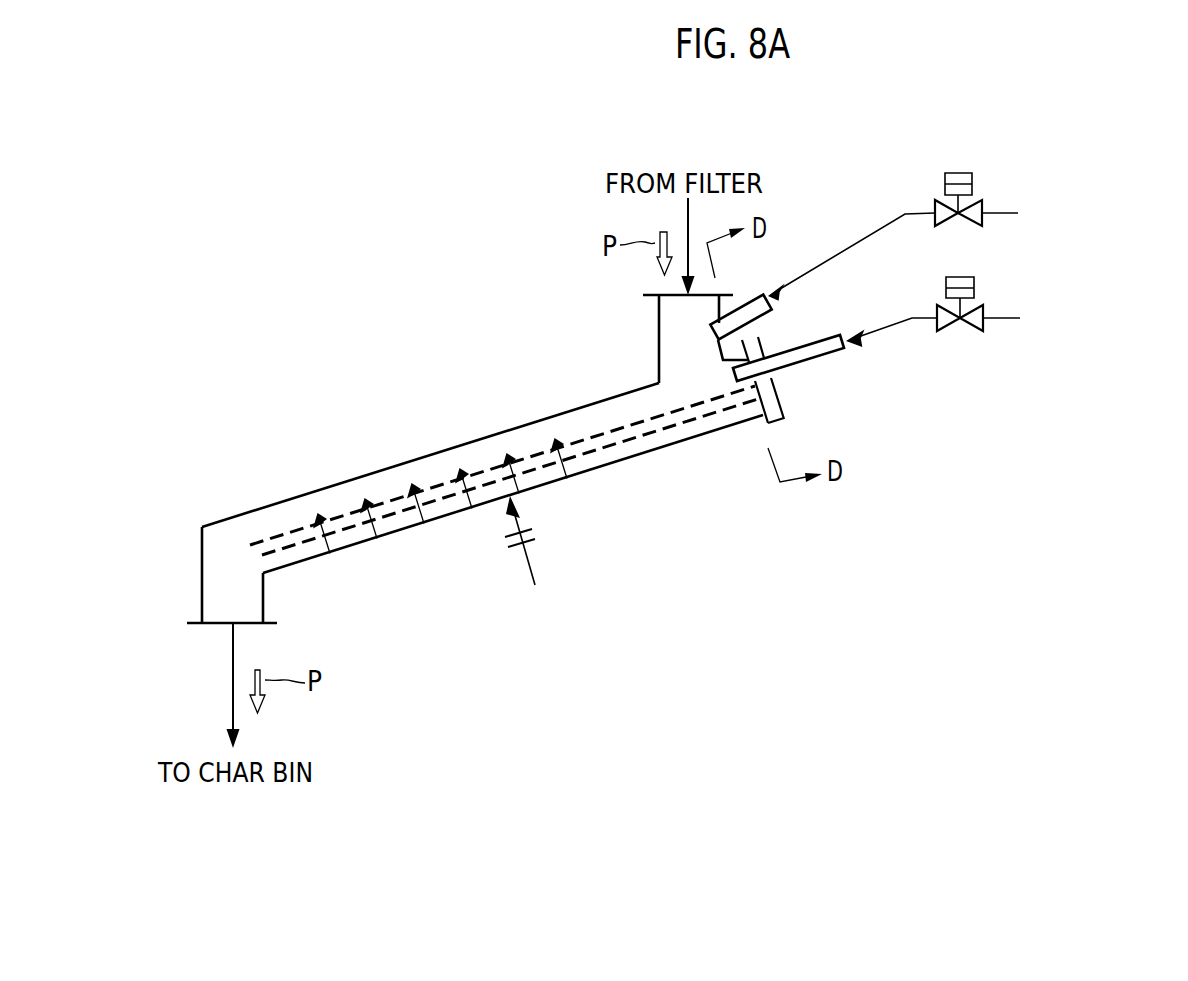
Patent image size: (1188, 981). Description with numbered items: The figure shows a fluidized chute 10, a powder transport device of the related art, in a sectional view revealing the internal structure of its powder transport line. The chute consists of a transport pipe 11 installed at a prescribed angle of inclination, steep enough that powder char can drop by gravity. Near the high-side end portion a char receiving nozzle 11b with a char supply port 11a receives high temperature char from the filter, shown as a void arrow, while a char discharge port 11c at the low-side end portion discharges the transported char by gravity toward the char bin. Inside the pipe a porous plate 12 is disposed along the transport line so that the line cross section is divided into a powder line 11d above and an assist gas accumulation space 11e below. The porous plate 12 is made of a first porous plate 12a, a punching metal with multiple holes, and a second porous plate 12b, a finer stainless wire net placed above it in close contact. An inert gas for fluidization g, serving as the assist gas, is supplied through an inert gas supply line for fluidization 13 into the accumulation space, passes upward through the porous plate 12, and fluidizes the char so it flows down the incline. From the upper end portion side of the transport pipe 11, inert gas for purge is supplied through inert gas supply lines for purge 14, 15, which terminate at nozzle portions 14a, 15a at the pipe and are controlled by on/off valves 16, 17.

The fluidized chute 10 is at (675, 456).
The transport pipe 11 is at (472, 473).
The char supply port 11a is at (668, 293).
The char receiving nozzle 11b is at (660, 342).
The char discharge port 11c is at (218, 628).
The powder line 11d is at (452, 462).
The assist gas accumulation space 11e is at (668, 438).
The porous plate 12 is at (494, 510).
The first porous plate 12a is at (295, 546).
The second porous plate 12b is at (280, 534).
The inert gas supply line for fluidization 13 is at (530, 563).
The inert gas supply line for purge 14 is at (835, 375).
The purge gas nozzle 14a is at (823, 356).
The inert gas supply line for purge 15 is at (822, 255).
The purge gas nozzle 15a is at (760, 320).
The on/off valve 16 is at (945, 283).
The on/off valve 17 is at (945, 176).
The inert gas for fluidization g is at (577, 458).